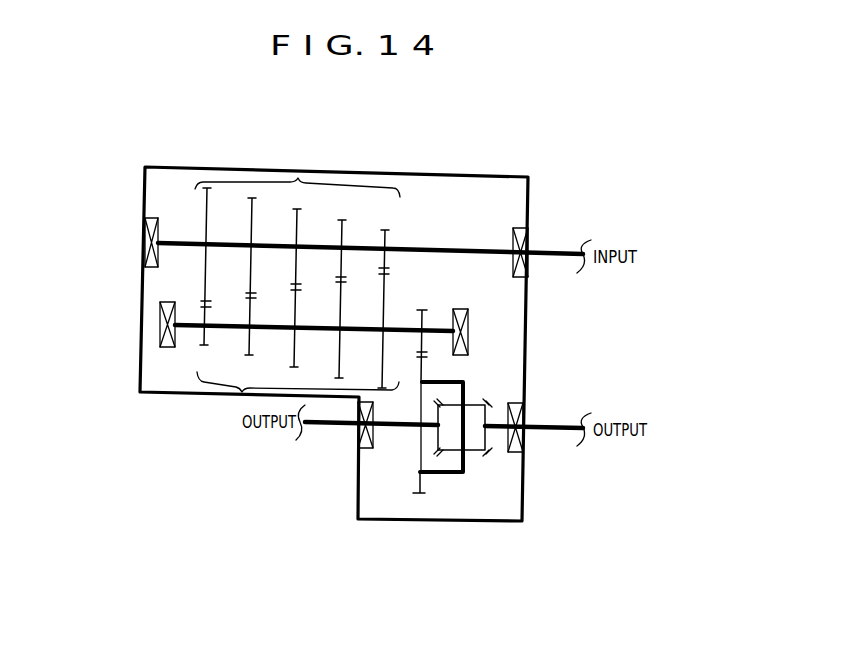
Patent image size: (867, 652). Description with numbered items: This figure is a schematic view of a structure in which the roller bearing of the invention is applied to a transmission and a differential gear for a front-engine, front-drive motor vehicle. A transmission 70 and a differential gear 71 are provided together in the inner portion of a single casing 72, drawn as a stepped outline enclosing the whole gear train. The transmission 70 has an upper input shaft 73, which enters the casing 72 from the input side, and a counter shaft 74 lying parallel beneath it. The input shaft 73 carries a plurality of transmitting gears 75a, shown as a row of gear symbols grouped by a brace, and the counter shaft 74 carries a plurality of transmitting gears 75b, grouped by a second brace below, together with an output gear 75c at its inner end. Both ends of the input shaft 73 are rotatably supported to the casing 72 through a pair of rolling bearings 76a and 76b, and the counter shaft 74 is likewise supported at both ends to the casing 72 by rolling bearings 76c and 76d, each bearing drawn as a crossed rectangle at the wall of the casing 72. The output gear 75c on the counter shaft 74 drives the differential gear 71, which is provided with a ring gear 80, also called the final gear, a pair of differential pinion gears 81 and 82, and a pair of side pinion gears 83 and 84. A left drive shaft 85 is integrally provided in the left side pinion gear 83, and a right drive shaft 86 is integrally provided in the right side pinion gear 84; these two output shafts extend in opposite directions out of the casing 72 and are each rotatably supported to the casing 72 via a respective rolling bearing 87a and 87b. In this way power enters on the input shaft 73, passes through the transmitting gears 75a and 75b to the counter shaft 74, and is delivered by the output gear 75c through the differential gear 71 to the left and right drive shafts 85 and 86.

The transmission 70 is at (196, 368).
The differential gear 71 is at (479, 374).
The casing 72 is at (453, 172).
The input shaft 73 is at (434, 247).
The counter shaft 74 is at (195, 320).
The transmitting gears 75a is at (298, 178).
The transmitting gears 75b is at (242, 397).
The output gear 75c is at (420, 311).
The rolling bearing 76a is at (150, 218).
The rolling bearing 76b is at (522, 227).
The rolling bearing 76c is at (160, 308).
The bearing 76d is at (455, 309).
The ring gear 80 is at (420, 478).
The differential pinion gear 81 is at (472, 403).
The differential pinion gear 82 is at (473, 455).
The side pinion gear 83 is at (420, 445).
The side pinion gear 84 is at (492, 450).
The left drive shaft 85 is at (328, 427).
The right drive shaft 86 is at (547, 427).
The rolling bearing 87a is at (367, 450).
The rolling bearing 87b is at (516, 455).